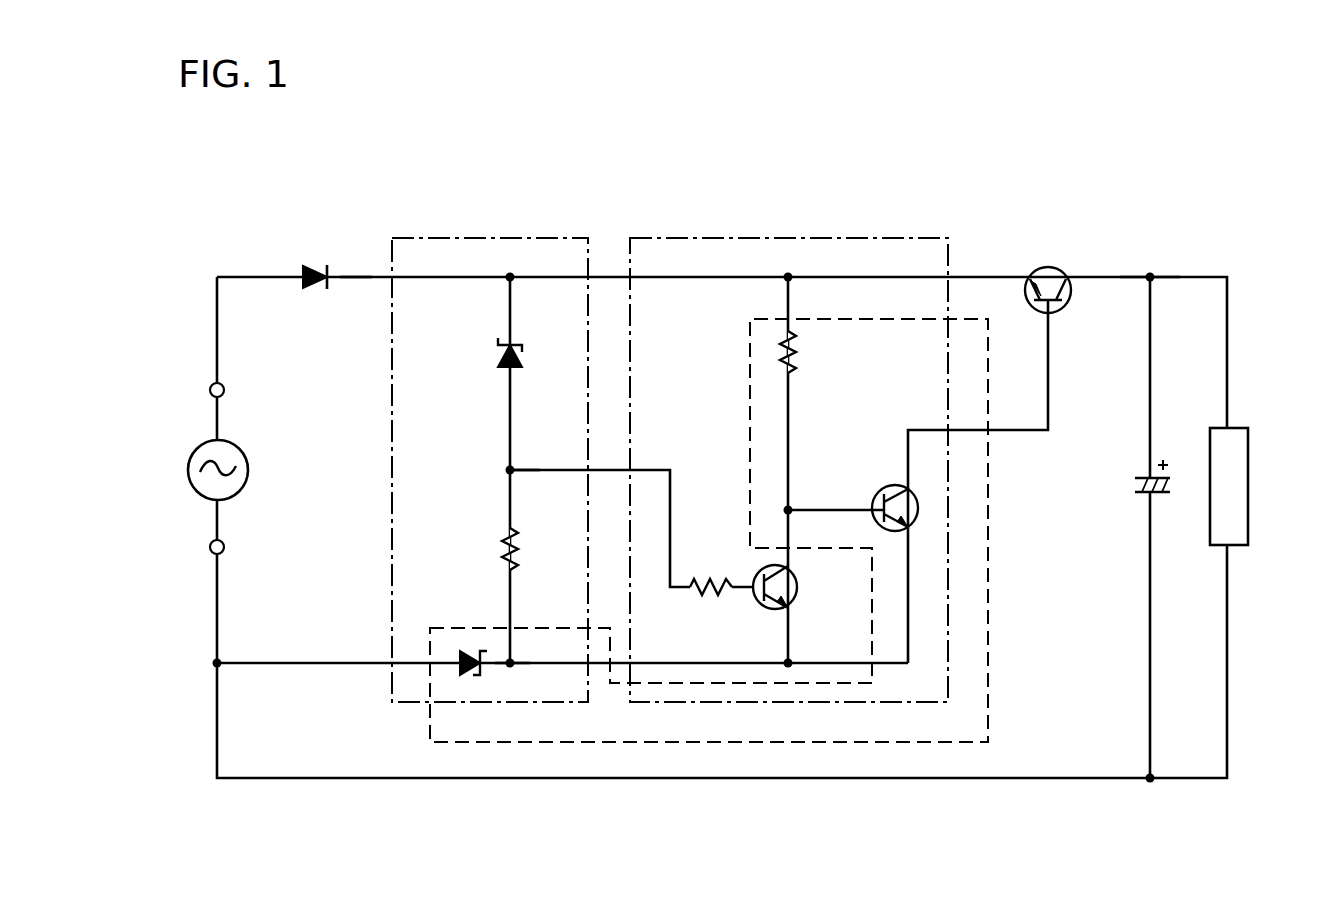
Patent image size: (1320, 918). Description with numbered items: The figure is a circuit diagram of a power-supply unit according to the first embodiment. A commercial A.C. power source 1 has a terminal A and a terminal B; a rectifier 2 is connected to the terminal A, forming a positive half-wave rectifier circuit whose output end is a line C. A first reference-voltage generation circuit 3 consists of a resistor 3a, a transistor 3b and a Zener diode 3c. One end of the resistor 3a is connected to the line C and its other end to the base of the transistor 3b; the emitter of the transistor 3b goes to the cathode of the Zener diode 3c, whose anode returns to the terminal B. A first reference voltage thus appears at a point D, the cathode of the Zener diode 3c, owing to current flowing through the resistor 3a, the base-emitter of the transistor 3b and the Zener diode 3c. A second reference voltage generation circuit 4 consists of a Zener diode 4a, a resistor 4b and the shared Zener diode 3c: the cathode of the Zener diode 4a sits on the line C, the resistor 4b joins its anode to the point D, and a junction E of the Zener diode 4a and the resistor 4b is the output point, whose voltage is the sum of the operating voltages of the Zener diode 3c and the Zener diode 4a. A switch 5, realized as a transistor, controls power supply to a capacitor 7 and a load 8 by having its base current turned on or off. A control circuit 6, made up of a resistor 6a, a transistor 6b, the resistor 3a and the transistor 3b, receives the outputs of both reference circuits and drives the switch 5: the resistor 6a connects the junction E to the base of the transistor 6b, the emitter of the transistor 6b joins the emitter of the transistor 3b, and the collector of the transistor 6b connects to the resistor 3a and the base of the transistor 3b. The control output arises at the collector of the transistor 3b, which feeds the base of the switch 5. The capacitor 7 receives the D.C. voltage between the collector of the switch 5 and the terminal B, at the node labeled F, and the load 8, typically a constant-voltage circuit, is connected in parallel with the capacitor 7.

The commercial A.C. power source 1 is at (188, 478).
The rectifier 2 is at (316, 262).
The first reference-voltage generation circuit 3 is at (988, 662).
The resistor 3a is at (798, 352).
The transistor 3b is at (888, 488).
The Zener diode 3c is at (492, 670).
The second reference voltage generation circuit 4 is at (500, 238).
The Zener diode 4a is at (500, 356).
The resistor 4b is at (504, 558).
The switch 5 is at (1041, 267).
The control circuit 6 is at (840, 238).
The resistor 6a is at (708, 580).
The transistor 6b is at (796, 602).
The capacitor 7 is at (1142, 478).
The load 8 is at (1240, 546).
The terminal A is at (212, 386).
The terminal B is at (212, 551).
The line C is at (360, 272).
The point D is at (516, 660).
The junction E is at (514, 467).
The output node F is at (1120, 275).